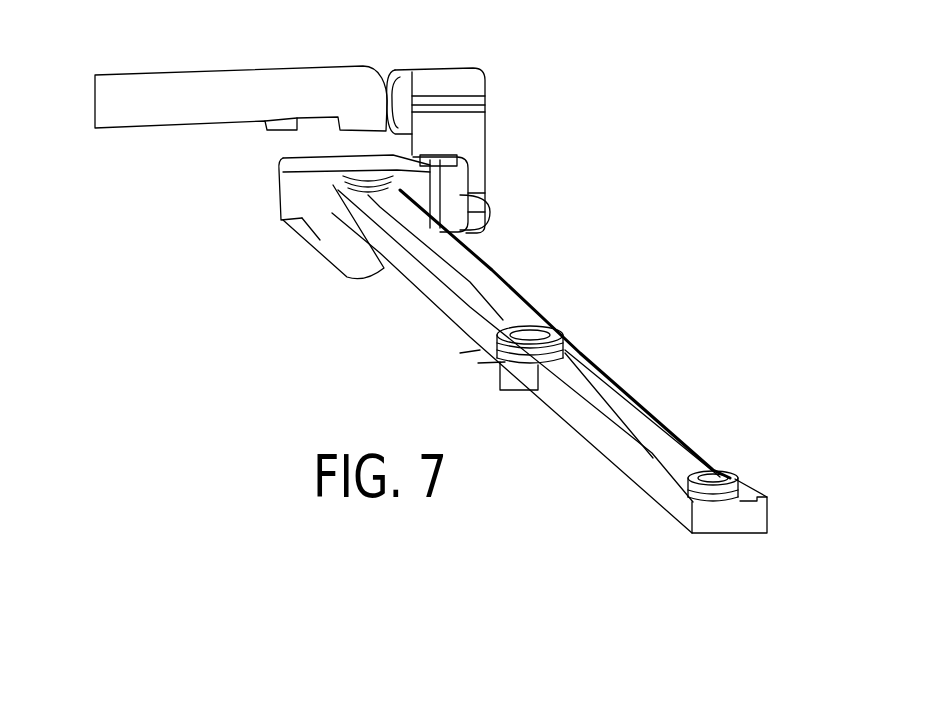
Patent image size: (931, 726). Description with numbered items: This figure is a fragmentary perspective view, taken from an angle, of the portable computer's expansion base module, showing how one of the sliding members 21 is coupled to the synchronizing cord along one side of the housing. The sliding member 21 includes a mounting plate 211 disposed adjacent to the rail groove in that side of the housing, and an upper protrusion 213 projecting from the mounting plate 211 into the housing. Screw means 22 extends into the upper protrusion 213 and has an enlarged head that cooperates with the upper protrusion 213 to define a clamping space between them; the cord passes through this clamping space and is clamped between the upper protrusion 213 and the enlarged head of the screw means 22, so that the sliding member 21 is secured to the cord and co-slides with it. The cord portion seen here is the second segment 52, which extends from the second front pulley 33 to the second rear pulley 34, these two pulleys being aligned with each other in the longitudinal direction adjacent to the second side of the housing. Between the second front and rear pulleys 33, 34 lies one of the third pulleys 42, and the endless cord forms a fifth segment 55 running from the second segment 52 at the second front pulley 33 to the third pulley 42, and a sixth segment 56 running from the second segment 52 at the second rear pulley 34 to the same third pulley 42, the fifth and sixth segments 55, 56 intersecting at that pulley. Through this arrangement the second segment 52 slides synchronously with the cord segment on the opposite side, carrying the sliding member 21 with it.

The sliding member 21 is at (492, 78).
The upper protrusion 213 is at (440, 177).
The screw means 22 is at (456, 207).
The mounting plate 211 is at (445, 225).
The second rear pulley 34 is at (368, 195).
The sixth segment 56 is at (478, 288).
The second segment 52 is at (620, 378).
The third pulley 42 is at (522, 380).
The second front pulley 33 is at (727, 470).
The fifth segment 55 is at (652, 455).